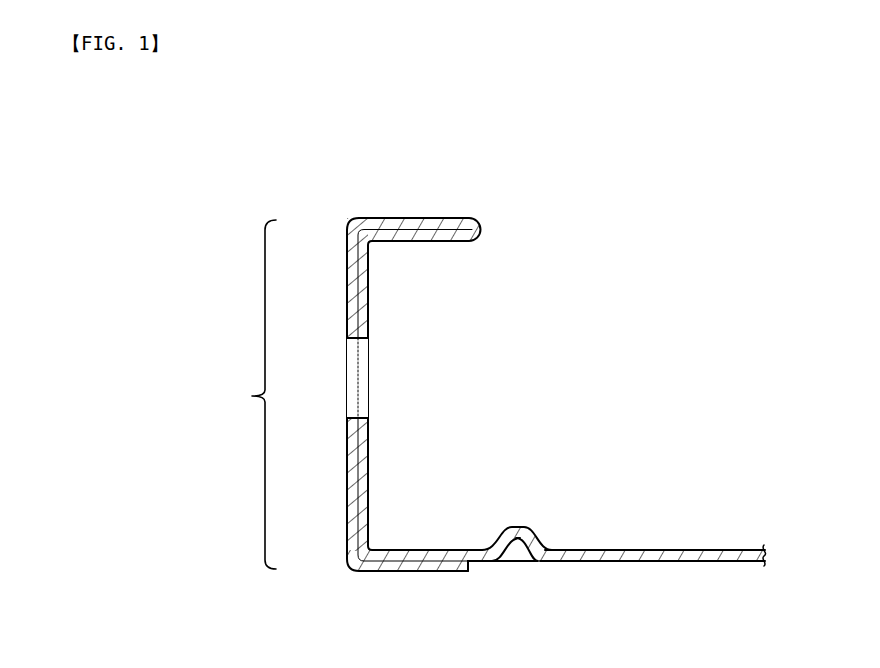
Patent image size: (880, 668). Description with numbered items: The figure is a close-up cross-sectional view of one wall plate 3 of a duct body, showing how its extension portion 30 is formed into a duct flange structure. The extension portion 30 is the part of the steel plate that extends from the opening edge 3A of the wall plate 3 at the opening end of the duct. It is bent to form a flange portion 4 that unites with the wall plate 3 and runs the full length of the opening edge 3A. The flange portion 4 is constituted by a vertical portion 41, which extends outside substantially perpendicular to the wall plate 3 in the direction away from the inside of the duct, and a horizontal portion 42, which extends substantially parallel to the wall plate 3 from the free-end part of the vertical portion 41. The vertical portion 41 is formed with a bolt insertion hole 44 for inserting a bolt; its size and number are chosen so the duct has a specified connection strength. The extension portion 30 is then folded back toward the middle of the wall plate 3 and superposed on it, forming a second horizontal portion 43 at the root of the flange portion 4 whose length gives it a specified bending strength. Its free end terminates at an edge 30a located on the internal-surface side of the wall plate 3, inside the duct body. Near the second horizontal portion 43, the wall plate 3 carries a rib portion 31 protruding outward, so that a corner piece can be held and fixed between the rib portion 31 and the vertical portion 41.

The flange portion 4 is at (329, 216).
The extension portion 30 is at (246, 394).
The edge 30a is at (469, 572).
The vertical portion 41 is at (348, 517).
The horizontal portion 42 is at (413, 218).
The second horizontal portion 43 is at (417, 572).
The bolt insertion hole 44 is at (350, 416).
The wall plate 3 is at (695, 549).
The opening edge 3A is at (385, 533).
The rib portion 31 is at (522, 528).